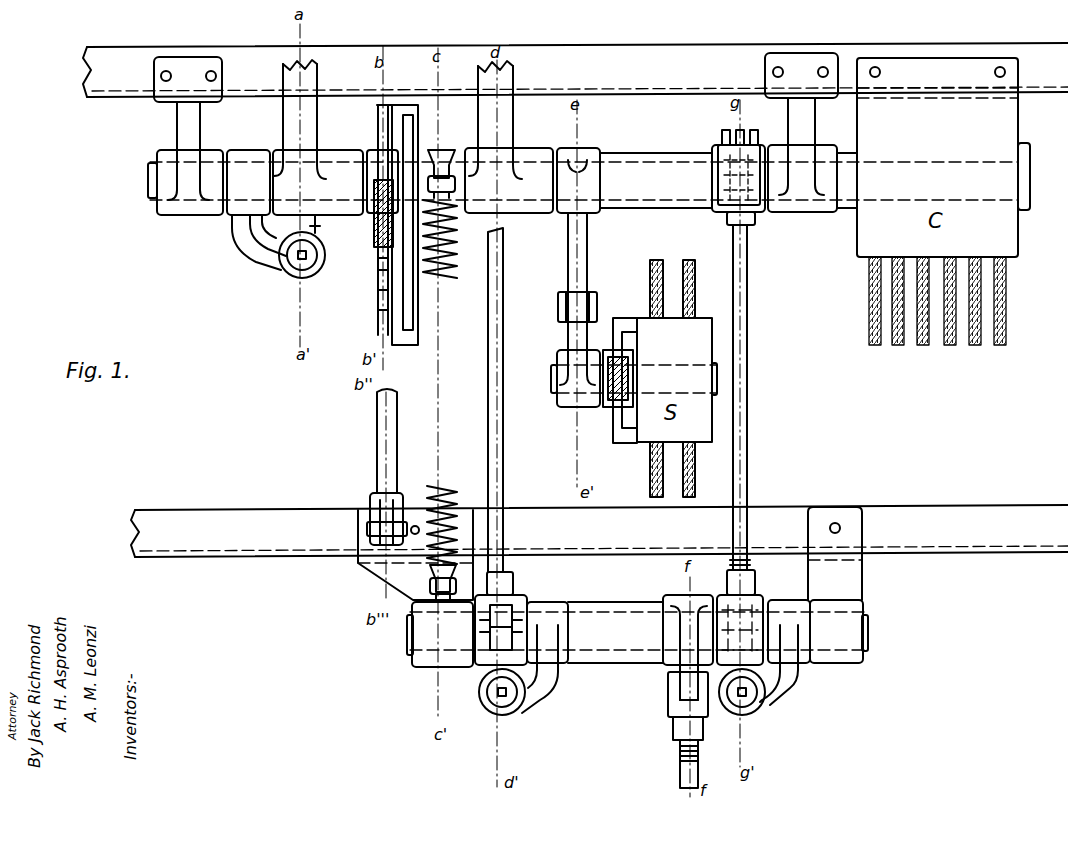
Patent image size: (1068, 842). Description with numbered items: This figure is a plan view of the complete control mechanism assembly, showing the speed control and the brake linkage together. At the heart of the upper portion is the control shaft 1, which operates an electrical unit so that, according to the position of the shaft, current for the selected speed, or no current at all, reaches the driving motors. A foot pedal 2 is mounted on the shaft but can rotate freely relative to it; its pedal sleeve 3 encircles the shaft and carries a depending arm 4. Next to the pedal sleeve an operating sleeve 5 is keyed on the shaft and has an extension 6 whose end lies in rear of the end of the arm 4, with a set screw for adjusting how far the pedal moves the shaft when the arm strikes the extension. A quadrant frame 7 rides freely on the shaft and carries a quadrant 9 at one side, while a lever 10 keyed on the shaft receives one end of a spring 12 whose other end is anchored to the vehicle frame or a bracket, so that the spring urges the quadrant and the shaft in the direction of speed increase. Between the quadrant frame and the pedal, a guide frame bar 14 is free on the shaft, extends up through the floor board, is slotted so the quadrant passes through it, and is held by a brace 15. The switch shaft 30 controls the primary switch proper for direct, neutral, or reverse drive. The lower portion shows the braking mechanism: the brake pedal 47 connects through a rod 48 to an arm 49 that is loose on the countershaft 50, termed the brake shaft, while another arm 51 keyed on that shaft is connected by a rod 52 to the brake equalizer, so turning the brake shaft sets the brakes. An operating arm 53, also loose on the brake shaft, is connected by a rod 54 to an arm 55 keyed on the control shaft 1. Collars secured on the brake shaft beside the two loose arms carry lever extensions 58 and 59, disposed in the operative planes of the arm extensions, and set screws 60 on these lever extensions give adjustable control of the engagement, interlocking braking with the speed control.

The control shaft 1 is at (146, 193).
The foot pedal 2 is at (283, 125).
The pedal sleeve 3 is at (332, 150).
The depending arm 4 is at (320, 230).
The operating sleeve 5 is at (237, 150).
The extension 6 is at (264, 250).
The quadrant frame 7 is at (401, 345).
The quadrant 9 is at (378, 300).
The lever 10 is at (454, 228).
The spring 12 is at (449, 280).
The guide frame bar 14 is at (374, 244).
The brace 15 is at (377, 450).
The switch shaft 30 is at (557, 392).
The brake pedal 47 is at (511, 76).
The rod 48 is at (504, 262).
The arm 49 is at (518, 597).
The countershaft 50 is at (412, 654).
The arm 51 is at (662, 666).
The rod 52 is at (668, 763).
The operating arm 53 is at (764, 596).
The rod 54 is at (750, 440).
The arm 55 is at (765, 212).
The lever extension 58 is at (548, 684).
The lever extension 59 is at (790, 687).
The set screws 60 is at (293, 268).